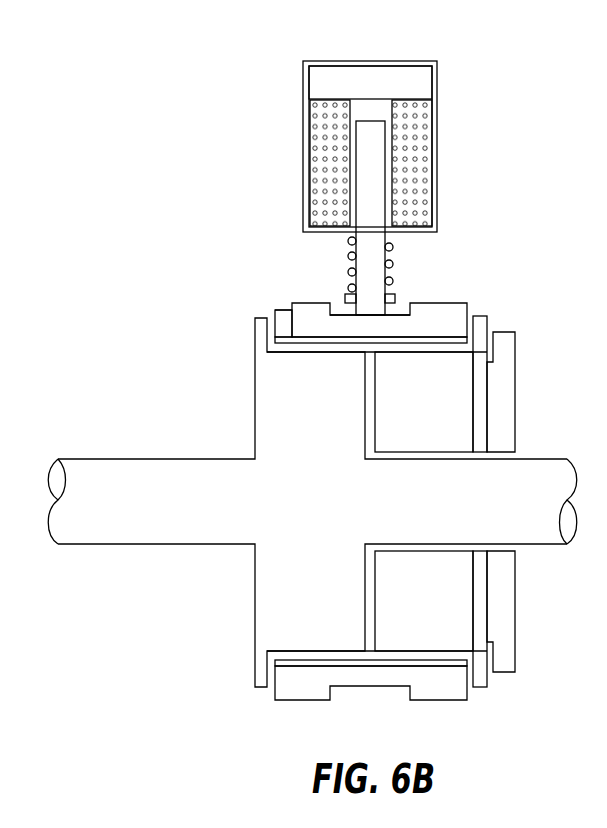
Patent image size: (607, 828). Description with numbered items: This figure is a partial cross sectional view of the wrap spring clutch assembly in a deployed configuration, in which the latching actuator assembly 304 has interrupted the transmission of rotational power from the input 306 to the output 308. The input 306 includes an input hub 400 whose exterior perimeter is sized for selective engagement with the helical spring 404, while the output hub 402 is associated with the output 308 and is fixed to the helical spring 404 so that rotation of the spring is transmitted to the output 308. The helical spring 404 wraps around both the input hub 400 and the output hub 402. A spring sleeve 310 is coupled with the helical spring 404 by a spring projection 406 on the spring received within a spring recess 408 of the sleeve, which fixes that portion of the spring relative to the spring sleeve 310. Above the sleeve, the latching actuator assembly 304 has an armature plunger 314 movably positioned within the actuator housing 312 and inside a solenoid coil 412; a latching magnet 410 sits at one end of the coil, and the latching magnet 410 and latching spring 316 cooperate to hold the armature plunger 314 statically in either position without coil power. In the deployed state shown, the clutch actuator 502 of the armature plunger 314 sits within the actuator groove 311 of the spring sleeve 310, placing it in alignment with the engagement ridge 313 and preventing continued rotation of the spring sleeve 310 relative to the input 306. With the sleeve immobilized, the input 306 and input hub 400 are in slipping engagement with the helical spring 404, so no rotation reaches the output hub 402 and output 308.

The latching actuator assembly 304 is at (372, 62).
The latching magnet 410 is at (322, 83).
The solenoid coil 412 is at (322, 158).
The actuator housing 312 is at (432, 152).
The armature plunger 314 is at (373, 257).
The latching spring 316 is at (348, 256).
The actuator groove 311 is at (342, 305).
The engagement ridge 313 is at (403, 300).
The spring sleeve 310 is at (447, 317).
The clutch actuator 502 is at (367, 310).
The spring projection 406 is at (275, 325).
The spring recess 408 is at (287, 310).
The helical spring 404 is at (292, 345).
The input hub 400 is at (272, 590).
The input 306 is at (147, 465).
The output hub 402 is at (383, 415).
The output 308 is at (503, 393).